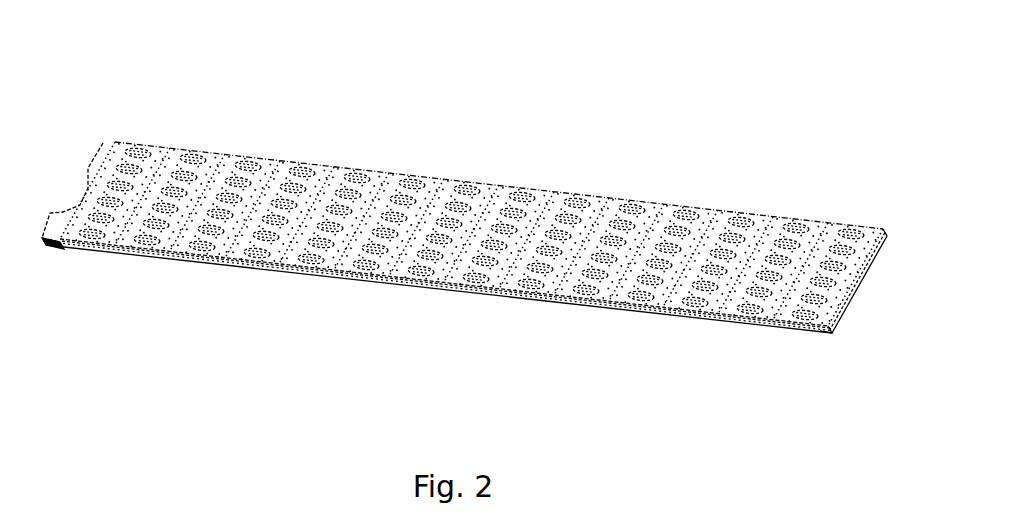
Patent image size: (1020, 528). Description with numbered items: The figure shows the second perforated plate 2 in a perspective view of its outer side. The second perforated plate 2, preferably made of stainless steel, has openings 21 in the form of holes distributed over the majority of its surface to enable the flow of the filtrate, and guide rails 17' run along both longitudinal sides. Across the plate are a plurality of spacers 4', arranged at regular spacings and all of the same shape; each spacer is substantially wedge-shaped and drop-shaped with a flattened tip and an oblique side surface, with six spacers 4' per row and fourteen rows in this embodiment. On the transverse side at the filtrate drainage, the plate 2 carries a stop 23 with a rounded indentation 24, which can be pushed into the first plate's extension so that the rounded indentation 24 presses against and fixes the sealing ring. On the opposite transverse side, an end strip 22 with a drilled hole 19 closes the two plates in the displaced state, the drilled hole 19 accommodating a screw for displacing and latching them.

The second perforated plate 2 is at (517, 148).
The openings 21 is at (350, 262).
The spacers 4' is at (480, 312).
The guide rails 17' is at (439, 338).
The drilled hole 19 is at (864, 296).
The end strip 22 is at (827, 335).
The stop 23 is at (102, 146).
The rounded indentation 24 is at (78, 182).